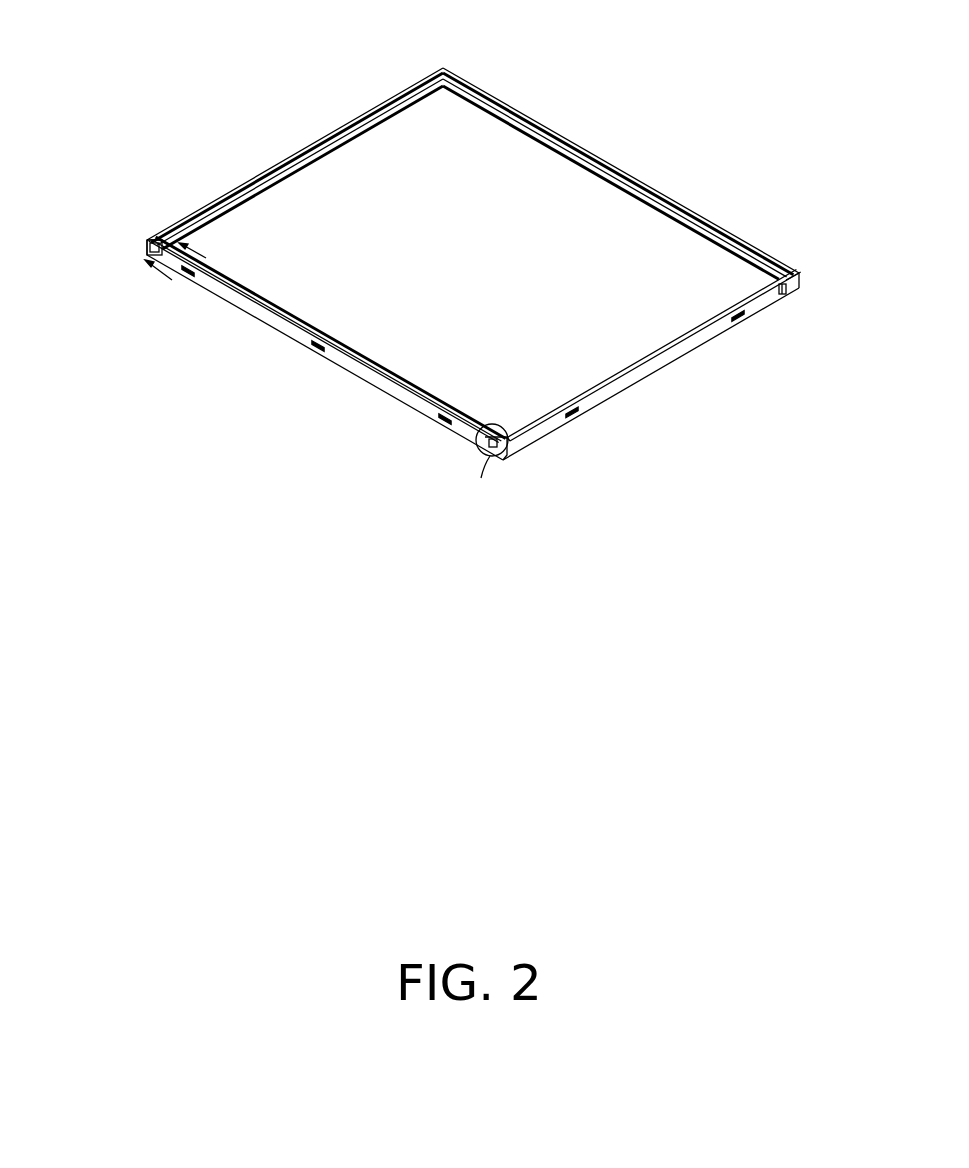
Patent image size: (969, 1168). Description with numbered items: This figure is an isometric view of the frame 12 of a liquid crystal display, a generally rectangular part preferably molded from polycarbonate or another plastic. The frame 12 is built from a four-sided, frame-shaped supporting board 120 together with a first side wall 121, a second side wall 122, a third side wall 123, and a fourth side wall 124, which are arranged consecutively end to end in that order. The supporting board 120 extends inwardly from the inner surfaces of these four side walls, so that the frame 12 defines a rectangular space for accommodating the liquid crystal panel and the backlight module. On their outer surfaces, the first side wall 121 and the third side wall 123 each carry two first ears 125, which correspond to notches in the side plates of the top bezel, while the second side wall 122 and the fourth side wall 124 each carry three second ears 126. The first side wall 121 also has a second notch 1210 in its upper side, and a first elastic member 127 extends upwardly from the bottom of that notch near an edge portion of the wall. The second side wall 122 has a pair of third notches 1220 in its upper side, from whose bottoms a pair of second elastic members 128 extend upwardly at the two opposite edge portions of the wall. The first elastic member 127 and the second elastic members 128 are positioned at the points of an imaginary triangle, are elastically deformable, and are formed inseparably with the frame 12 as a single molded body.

The frame 12 is at (476, 41).
The supporting board 120 is at (263, 188).
The fourth side wall 124 is at (632, 182).
The second side wall 122 is at (280, 327).
The first side wall 121 is at (543, 433).
The third side wall 123 is at (175, 235).
The third notch 1220 is at (147, 248).
The second notch 1210 is at (790, 291).
The first elastic member 127 is at (788, 292).
The first ear 125 is at (738, 326).
The second ear 126 is at (440, 422).
The second elastic member 128 is at (488, 447).